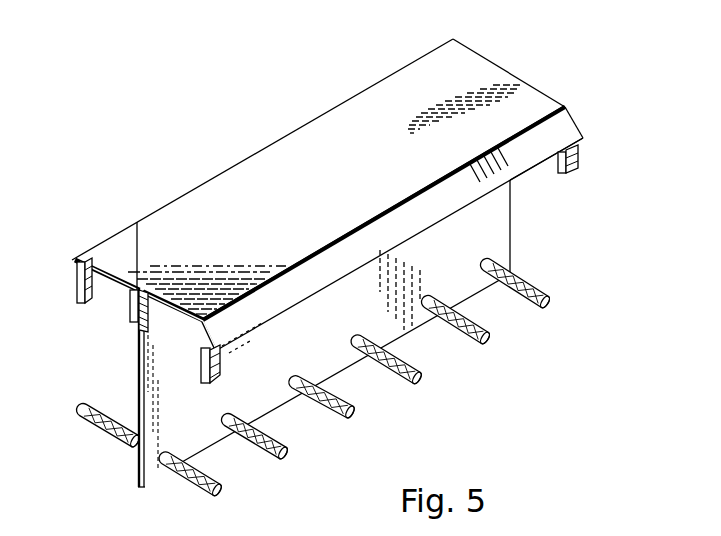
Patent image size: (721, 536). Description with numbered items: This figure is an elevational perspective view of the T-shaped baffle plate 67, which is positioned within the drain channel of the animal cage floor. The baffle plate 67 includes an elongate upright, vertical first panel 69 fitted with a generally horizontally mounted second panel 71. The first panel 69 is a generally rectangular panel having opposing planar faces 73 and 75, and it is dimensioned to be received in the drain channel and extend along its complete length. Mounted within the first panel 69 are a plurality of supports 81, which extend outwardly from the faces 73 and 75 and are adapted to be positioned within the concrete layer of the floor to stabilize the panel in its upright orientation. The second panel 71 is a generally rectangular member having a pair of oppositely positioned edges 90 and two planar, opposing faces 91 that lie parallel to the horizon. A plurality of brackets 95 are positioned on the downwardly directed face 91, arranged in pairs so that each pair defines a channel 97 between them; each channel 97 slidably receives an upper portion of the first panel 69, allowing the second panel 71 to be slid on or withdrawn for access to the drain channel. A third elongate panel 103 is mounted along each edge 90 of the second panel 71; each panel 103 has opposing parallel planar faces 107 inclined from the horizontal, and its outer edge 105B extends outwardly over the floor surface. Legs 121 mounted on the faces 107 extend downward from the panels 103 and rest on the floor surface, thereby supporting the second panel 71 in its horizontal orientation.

The planar face 91 is at (493, 66).
The edge 90 is at (315, 124).
The planar face 107 is at (402, 212).
The third elongate panel 103 is at (467, 174).
The edge 105B is at (533, 170).
The planar face 73 is at (460, 268).
The first panel 69 is at (321, 349).
The second panel 71 is at (247, 244).
The supports 81 is at (107, 436).
The baffle plate 67 is at (137, 355).
The planar face 75 is at (137, 388).
The brackets 95 is at (131, 307).
The channel 97 is at (137, 224).
The supports 121 is at (75, 288).